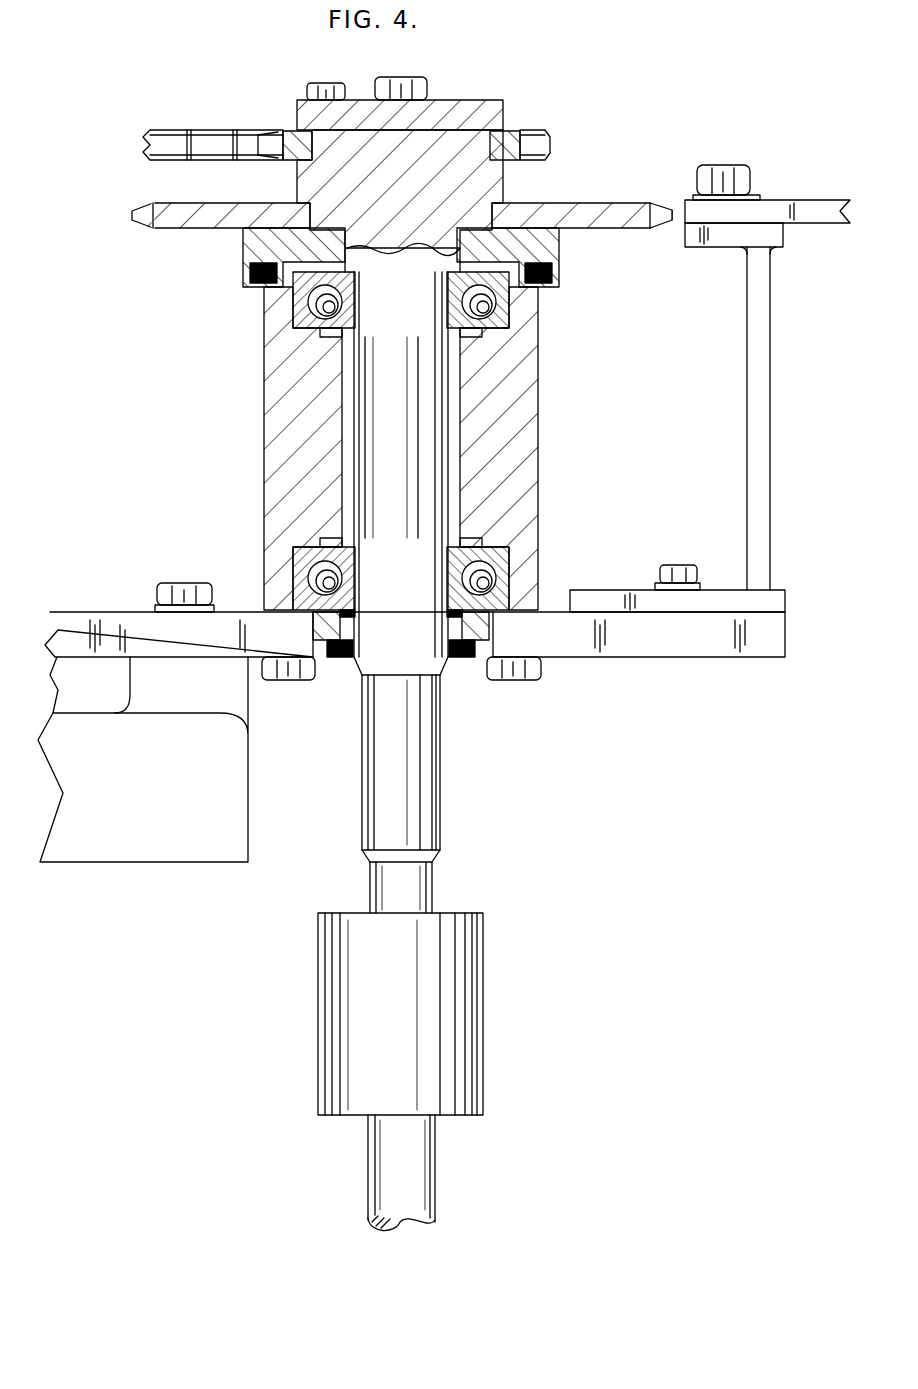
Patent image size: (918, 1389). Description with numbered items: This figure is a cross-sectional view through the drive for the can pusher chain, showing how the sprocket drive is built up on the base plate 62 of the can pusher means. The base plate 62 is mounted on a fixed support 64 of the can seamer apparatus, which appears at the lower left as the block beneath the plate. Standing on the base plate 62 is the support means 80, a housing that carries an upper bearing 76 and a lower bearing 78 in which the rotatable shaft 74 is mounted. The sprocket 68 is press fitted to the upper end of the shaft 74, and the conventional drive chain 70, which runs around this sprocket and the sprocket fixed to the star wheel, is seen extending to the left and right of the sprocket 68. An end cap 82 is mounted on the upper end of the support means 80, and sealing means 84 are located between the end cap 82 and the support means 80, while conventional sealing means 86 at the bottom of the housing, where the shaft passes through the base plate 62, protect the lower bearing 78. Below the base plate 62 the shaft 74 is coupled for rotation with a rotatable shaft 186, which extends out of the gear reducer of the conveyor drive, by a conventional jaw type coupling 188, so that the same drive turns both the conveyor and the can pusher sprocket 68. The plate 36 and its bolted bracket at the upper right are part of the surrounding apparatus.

The mounting plate 36 is at (609, 204).
The base plate 62 is at (562, 650).
The fixed support 64 is at (196, 850).
The sprocket 68 is at (507, 142).
The drive chain 70 is at (211, 143).
The rotatable shaft 74 is at (503, 185).
The bearing 76 is at (345, 323).
The lower bearing 78 is at (293, 560).
The support means 80 is at (264, 459).
The end cap 82 is at (560, 253).
The sealing means 84 is at (545, 287).
The sealing means 86 is at (456, 658).
The rotatable shaft 186 is at (435, 1158).
The jaw type coupling 188 is at (483, 988).